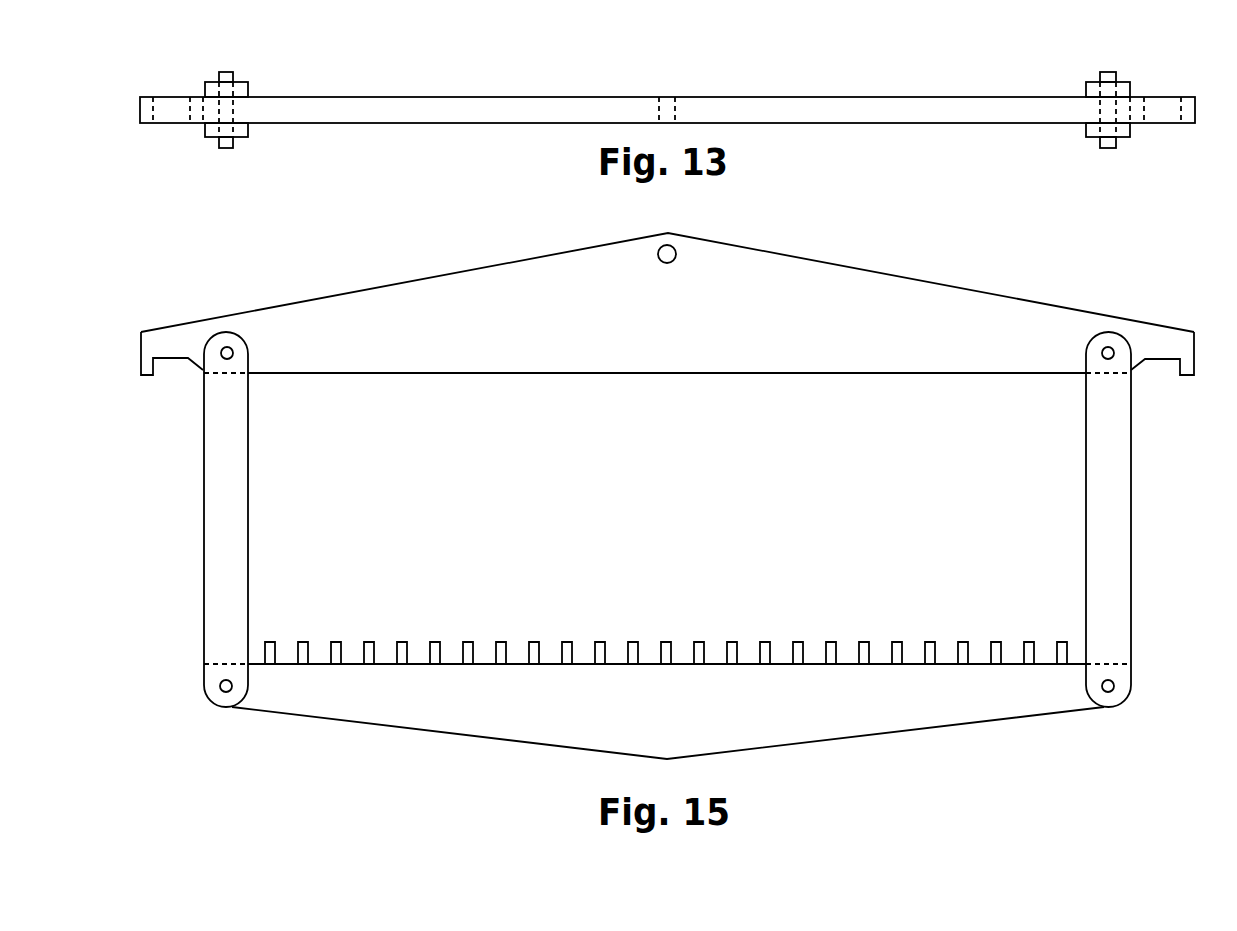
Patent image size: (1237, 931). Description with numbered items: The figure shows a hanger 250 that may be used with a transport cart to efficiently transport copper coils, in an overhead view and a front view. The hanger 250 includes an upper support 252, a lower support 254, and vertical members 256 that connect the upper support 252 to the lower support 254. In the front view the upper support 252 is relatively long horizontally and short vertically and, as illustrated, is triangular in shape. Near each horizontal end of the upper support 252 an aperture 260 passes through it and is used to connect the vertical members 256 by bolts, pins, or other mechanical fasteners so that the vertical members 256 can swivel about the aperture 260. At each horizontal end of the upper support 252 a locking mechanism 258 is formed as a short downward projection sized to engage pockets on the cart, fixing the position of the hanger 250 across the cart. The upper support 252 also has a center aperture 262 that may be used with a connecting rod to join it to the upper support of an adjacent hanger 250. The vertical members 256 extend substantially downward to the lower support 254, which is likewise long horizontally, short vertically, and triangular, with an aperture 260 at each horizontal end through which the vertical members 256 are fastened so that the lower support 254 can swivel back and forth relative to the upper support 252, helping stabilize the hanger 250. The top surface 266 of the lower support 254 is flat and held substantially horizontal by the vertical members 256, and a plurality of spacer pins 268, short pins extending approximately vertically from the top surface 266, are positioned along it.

In FIG. 13, the hanger 250 is at (266, 42).
In FIG. 15, the hanger 250 is at (158, 580).
In FIG. 15, the upper support 252 is at (345, 327).
In FIG. 15, the lower support 254 is at (462, 702).
In FIG. 13, the vertical members 256 is at (248, 92).
In FIG. 15, the vertical members 256 is at (232, 480).
In FIG. 15, the locking mechanism 258 is at (143, 362).
In FIG. 13, the aperture 260 is at (233, 103).
In FIG. 15, the aperture 260 is at (226, 350).
In FIG. 13, the center aperture 262 is at (677, 110).
In FIG. 15, the center aperture 262 is at (677, 254).
In FIG. 15, the top surface 266 is at (752, 664).
In FIG. 15, the spacer pins 268 is at (372, 650).